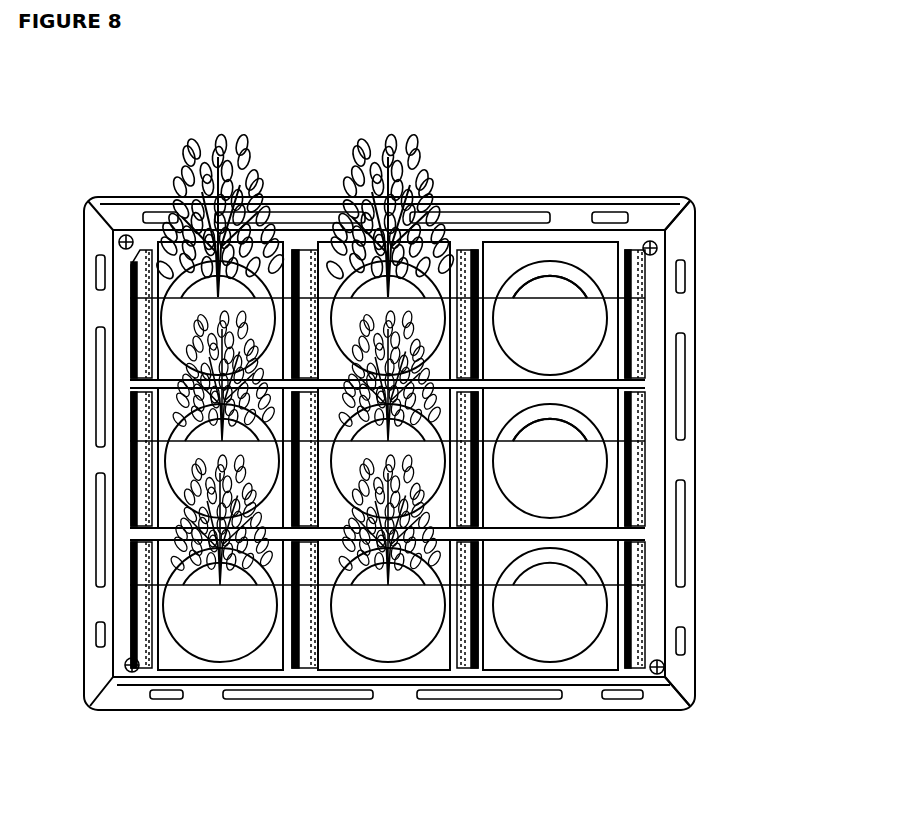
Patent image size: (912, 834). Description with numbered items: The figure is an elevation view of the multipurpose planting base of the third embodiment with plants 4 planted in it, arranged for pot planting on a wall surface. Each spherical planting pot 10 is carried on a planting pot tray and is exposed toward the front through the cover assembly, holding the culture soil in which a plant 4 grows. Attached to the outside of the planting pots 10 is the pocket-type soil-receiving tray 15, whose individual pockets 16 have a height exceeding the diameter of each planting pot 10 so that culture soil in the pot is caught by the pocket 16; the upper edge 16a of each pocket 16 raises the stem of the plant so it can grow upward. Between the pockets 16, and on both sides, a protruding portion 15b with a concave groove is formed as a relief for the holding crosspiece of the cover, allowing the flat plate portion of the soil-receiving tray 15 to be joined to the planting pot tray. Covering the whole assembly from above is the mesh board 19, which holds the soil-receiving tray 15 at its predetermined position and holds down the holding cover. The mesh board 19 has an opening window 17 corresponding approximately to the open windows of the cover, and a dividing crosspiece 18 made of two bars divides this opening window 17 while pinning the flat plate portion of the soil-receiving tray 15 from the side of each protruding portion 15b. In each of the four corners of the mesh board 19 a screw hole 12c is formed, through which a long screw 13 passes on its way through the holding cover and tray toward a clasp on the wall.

The plant 4 is at (430, 152).
The planting pot 10 is at (548, 280).
The screw hole 12c is at (652, 240).
The long screw 13 is at (668, 243).
The soil-receiving tray 15 is at (600, 517).
The protruding portion 15b is at (490, 272).
The pocket 16 is at (566, 335).
The upper edge 16a is at (190, 420).
The opening window 17 is at (346, 660).
The dividing crosspiece 18 is at (450, 652).
The mesh board 19 is at (690, 311).